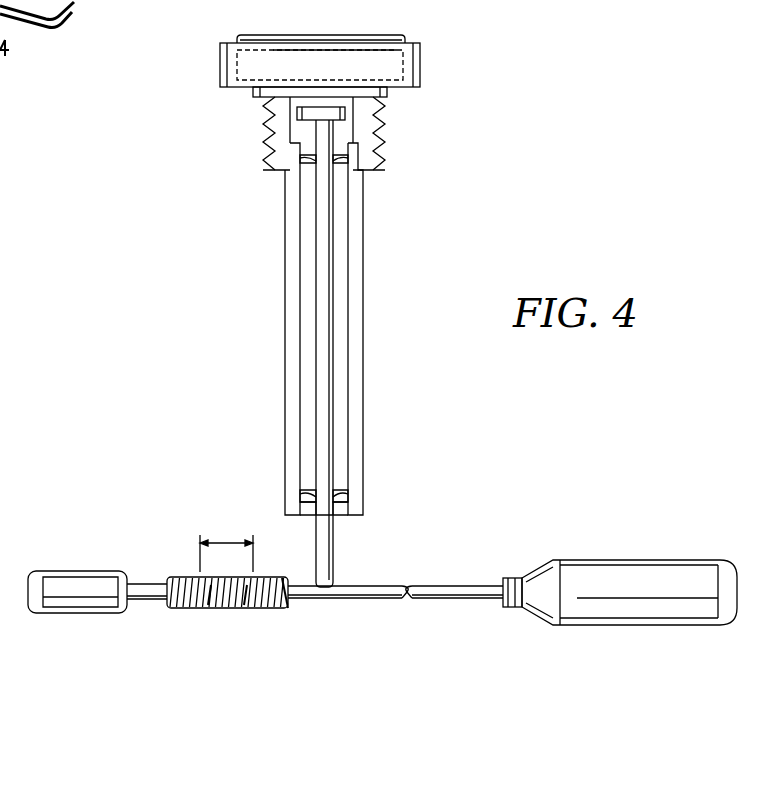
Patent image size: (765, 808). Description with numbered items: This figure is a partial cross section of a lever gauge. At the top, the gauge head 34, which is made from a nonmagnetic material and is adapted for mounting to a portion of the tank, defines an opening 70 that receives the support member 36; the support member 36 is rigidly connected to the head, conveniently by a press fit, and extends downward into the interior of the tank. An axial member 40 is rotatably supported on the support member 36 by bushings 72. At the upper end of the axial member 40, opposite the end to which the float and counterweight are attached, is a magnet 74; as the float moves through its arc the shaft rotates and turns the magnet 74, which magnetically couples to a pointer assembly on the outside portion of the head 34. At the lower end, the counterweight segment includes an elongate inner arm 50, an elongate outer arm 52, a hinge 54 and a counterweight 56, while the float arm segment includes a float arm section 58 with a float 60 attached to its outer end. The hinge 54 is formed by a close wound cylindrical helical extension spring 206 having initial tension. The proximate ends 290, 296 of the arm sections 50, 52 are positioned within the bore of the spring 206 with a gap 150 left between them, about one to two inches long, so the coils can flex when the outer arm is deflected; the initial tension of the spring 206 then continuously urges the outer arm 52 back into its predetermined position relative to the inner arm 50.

The gauge head 34 is at (422, 67).
The support member 36 is at (363, 357).
The axial member 40 is at (313, 329).
The elongate inner arm 50 is at (300, 600).
The elongate outer arm 52 is at (142, 603).
The hinge 54 is at (179, 571).
The counterweight 56 is at (72, 572).
The float arm section 58 is at (462, 582).
The float 60 is at (643, 558).
The opening 70 is at (298, 131).
The bushings 72 is at (340, 160).
The magnet 74 is at (287, 111).
The gap 150 is at (223, 541).
The close wound cylindrical helical extension spring 206 is at (268, 577).
The proximate end of inner arm section 290 is at (243, 610).
The proximate end of outer arm section 296 is at (217, 604).